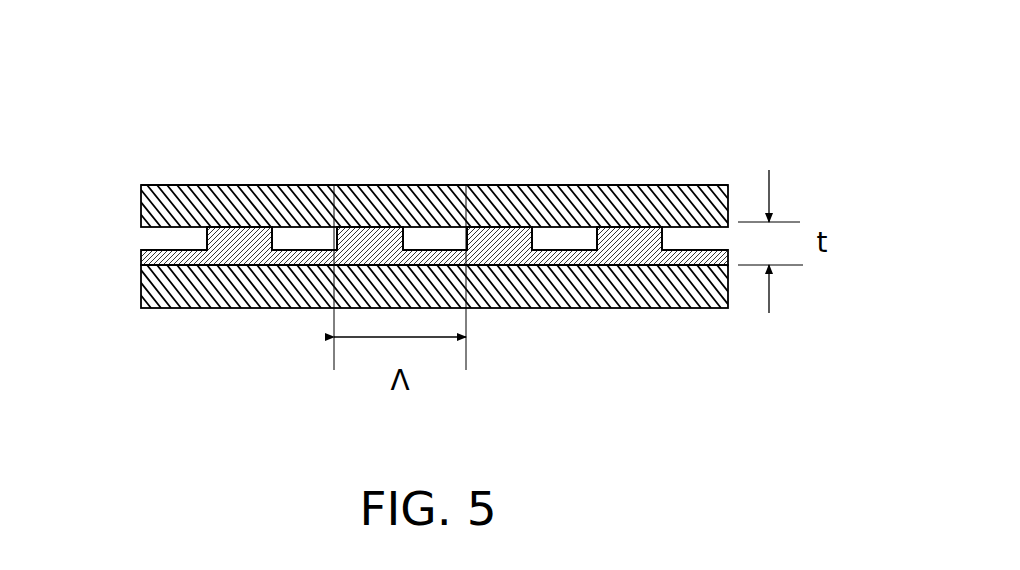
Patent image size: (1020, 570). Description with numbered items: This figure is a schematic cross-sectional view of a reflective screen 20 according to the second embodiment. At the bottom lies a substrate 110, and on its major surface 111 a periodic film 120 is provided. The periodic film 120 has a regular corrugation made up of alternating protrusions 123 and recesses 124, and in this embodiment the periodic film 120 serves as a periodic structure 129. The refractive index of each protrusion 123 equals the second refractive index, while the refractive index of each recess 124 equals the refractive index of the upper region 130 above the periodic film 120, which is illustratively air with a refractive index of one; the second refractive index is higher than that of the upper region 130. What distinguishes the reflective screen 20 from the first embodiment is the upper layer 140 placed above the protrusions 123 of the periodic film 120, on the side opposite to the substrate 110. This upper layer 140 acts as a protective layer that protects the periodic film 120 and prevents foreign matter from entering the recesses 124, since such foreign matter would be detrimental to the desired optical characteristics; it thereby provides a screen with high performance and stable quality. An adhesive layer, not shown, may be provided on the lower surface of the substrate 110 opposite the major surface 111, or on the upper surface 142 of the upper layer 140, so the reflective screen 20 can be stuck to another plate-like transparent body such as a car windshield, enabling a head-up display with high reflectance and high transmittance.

The reflective screen 20 is at (462, 197).
The substrate 110 is at (141, 305).
The major surface 111 is at (212, 267).
The periodic film 120 is at (140, 255).
The periodic structure 129 is at (384, 255).
The protrusion 123 is at (348, 228).
The recess 124 is at (293, 132).
The upper region 130 is at (562, 237).
The upper layer 140 is at (645, 186).
The upper surface 142 is at (187, 186).